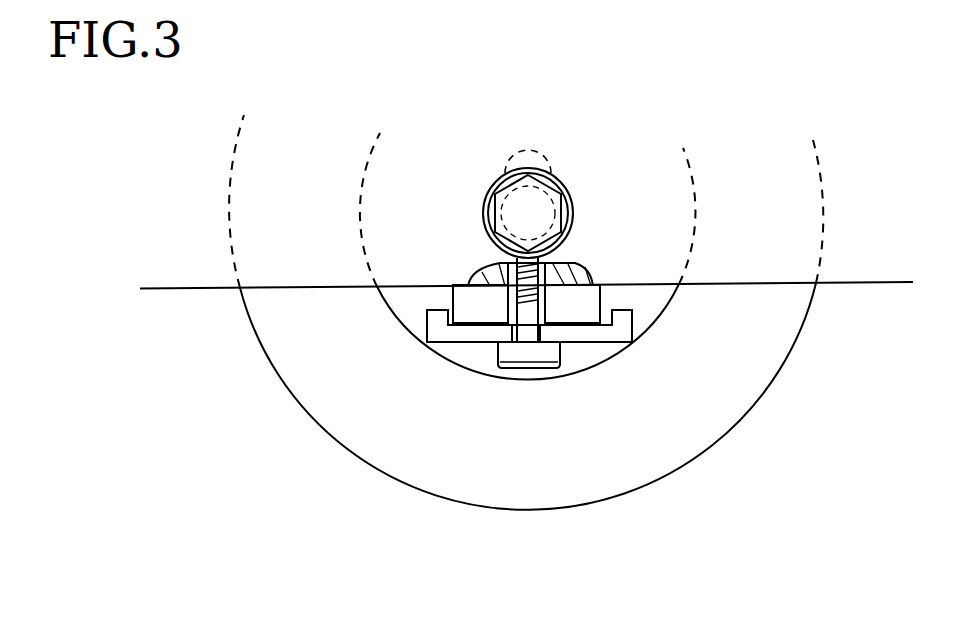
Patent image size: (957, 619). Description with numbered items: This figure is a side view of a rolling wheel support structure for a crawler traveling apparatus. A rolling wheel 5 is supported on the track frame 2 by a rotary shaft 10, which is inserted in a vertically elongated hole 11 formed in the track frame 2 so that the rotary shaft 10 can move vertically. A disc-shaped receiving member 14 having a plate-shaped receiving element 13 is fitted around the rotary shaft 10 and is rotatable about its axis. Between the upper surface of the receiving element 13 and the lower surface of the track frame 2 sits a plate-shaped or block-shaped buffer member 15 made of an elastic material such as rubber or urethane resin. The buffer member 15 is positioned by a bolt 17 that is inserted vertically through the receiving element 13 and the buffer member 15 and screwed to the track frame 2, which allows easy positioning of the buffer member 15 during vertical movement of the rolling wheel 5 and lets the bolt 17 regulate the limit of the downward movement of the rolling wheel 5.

The track frame 2 is at (189, 277).
The rolling wheel 5 is at (318, 390).
The rotary shaft 10 is at (560, 180).
The vertically elongated hole 11 is at (508, 152).
The receiving element 13 is at (544, 448).
The receiving member 14 is at (412, 318).
The buffer member 15 is at (485, 425).
The bolt 17 is at (505, 464).